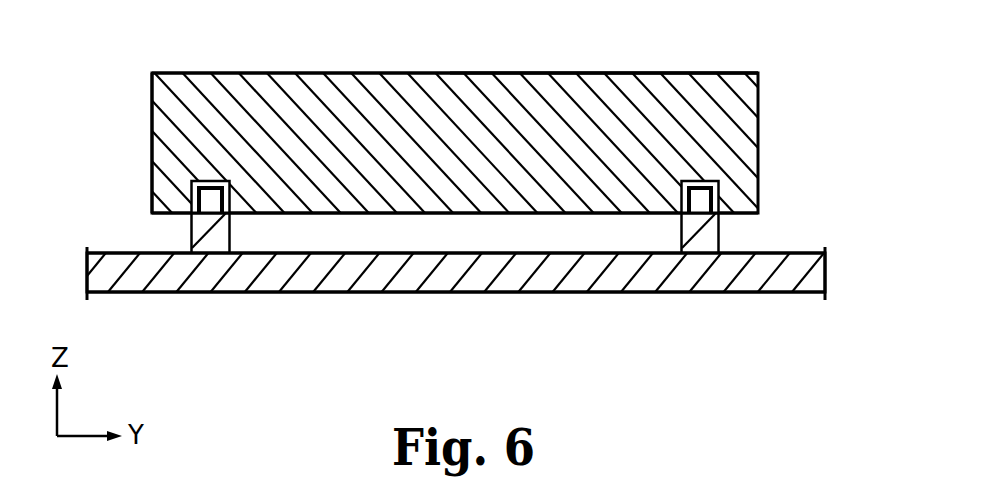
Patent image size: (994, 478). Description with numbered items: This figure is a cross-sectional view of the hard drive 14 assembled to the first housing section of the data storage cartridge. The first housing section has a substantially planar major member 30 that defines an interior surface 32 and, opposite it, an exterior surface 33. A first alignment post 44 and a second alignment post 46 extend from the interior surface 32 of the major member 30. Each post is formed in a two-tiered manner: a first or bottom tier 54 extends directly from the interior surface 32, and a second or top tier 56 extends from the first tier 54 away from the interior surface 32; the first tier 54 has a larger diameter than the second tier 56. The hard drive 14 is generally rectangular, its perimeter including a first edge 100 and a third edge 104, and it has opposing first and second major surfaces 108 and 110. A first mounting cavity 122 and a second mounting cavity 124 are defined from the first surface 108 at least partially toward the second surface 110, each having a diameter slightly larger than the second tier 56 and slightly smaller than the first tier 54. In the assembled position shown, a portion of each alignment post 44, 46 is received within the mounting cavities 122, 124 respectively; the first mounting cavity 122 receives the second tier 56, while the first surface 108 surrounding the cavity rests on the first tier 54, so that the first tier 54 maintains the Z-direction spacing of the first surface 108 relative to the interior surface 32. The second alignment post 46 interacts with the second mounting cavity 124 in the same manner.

The hard drive 14 is at (566, 70).
The major member 30 is at (739, 284).
The interior surface 32 is at (128, 253).
The exterior surface 33 is at (578, 293).
The first alignment post 44 is at (695, 240).
The second alignment post 46 is at (229, 231).
The first tier 54 is at (230, 240).
The second tier 56 is at (238, 214).
The first edge 100 is at (758, 133).
The third edge 104 is at (152, 110).
The first surface 108 is at (156, 215).
The second surface 110 is at (735, 73).
The first mounting cavity 122 is at (712, 192).
The second mounting cavity 124 is at (191, 195).